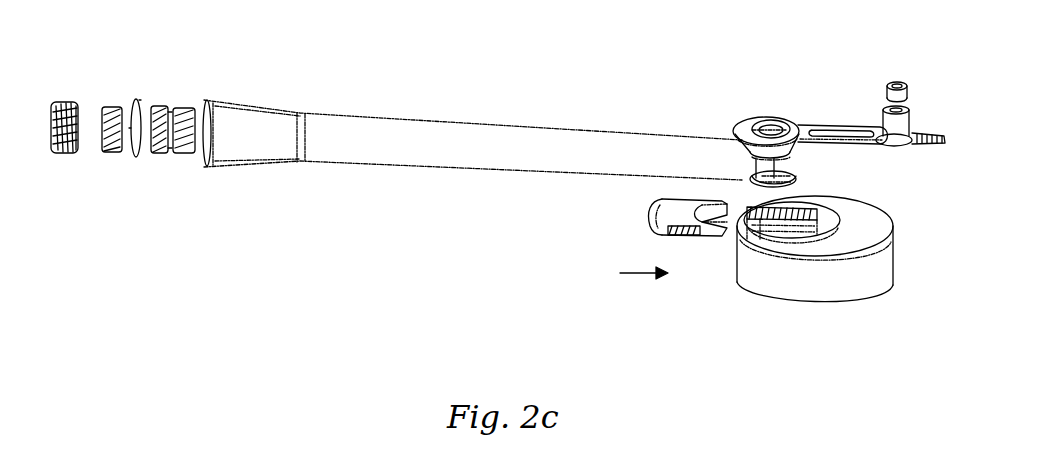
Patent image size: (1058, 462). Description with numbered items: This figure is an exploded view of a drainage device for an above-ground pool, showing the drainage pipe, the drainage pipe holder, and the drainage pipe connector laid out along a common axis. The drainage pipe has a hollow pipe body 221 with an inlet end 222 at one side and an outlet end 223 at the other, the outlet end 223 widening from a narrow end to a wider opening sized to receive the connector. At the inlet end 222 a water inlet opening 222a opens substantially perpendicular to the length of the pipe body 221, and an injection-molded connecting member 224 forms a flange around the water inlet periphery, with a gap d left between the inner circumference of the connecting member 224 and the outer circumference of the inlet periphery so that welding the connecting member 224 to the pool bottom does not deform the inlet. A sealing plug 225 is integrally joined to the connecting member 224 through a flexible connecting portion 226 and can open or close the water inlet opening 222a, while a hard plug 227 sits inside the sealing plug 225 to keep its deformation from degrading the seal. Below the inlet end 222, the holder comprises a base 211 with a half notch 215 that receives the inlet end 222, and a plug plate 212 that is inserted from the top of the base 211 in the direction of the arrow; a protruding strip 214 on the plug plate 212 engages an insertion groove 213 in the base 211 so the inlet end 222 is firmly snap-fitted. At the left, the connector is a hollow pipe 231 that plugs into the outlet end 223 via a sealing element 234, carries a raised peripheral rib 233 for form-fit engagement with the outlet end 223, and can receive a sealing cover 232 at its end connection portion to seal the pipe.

The base 211 is at (832, 277).
The plug plate 212 is at (670, 206).
The insertion groove 213 is at (760, 210).
The protruding strip 214 is at (675, 234).
The half notch 215 is at (825, 223).
The pipe body 221 is at (430, 153).
The inlet end 222 is at (775, 168).
The water inlet opening 222a is at (773, 131).
The outlet end 223 is at (263, 138).
The connecting member 224 is at (757, 120).
The sealing plug 225 is at (903, 127).
The flexible connecting portion 226 is at (838, 124).
The hard plug 227 is at (892, 85).
The hollow pipe 231 is at (145, 150).
The sealing cover 232 is at (66, 112).
The raised peripheral rib 233 is at (137, 152).
The sealing element 234 is at (174, 112).
The gap d is at (748, 131).